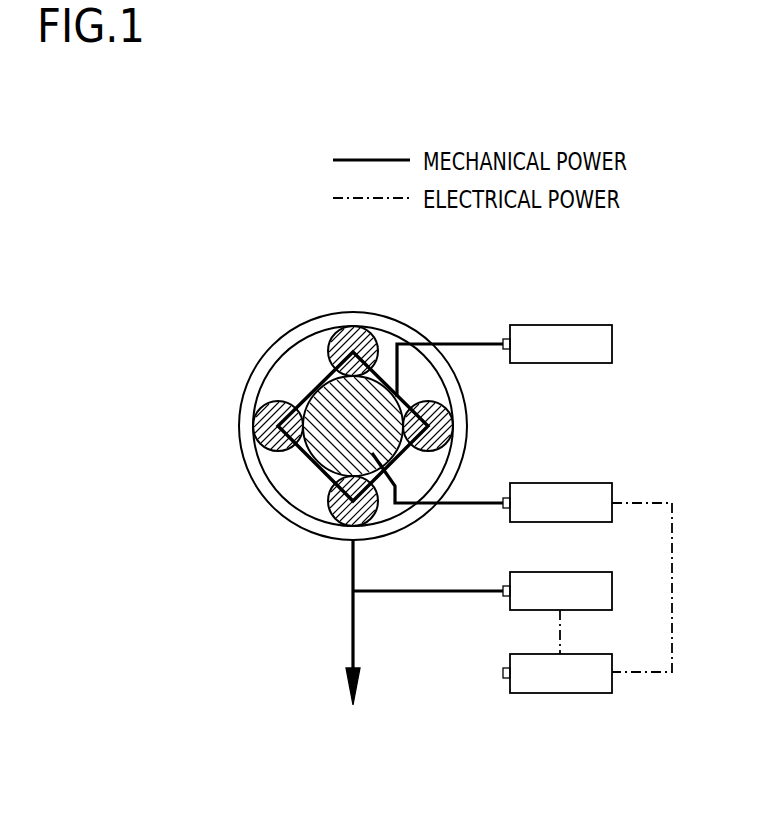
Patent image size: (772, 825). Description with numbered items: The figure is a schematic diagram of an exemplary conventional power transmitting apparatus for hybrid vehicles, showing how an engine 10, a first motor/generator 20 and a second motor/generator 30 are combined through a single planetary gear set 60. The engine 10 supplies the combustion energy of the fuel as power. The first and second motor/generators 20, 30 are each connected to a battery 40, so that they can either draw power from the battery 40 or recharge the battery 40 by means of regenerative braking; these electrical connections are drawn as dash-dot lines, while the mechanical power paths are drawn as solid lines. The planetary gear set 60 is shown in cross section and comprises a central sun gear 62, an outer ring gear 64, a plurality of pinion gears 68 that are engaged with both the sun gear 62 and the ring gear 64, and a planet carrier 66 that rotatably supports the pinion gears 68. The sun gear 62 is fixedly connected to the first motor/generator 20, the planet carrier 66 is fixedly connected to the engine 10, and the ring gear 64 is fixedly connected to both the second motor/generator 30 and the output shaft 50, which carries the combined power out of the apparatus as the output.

The engine 10 is at (612, 345).
The first motor/generator 20 is at (612, 489).
The second motor/generator 30 is at (612, 590).
The battery 40 is at (612, 690).
The output shaft 50 is at (352, 647).
The planetary gear set 60 is at (324, 413).
The sun gear 62 is at (317, 448).
The ring gear 64 is at (248, 460).
The planet carrier 66 is at (313, 393).
The pinion gears 68 is at (337, 523).